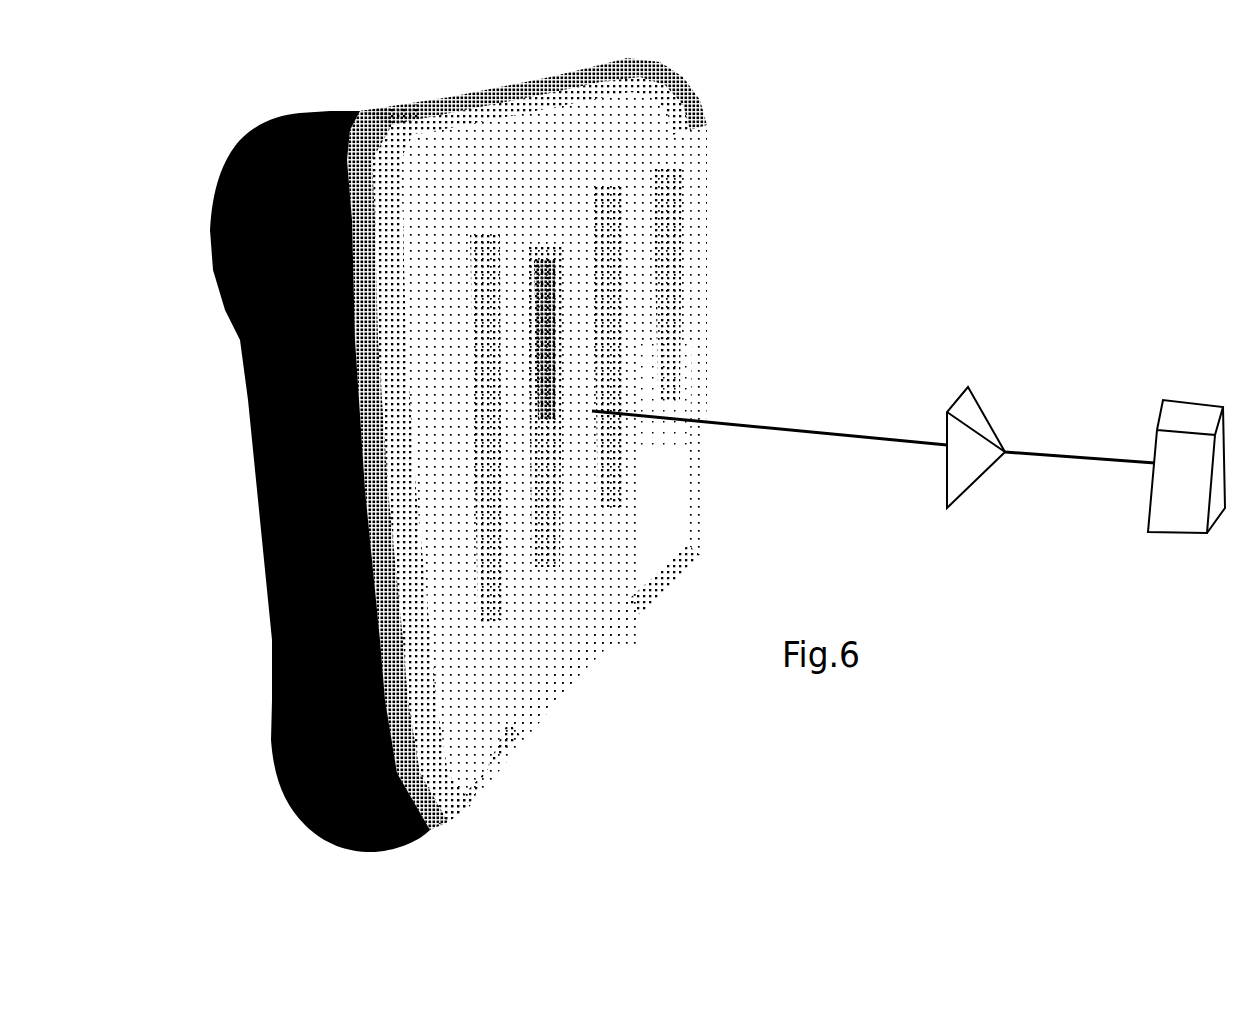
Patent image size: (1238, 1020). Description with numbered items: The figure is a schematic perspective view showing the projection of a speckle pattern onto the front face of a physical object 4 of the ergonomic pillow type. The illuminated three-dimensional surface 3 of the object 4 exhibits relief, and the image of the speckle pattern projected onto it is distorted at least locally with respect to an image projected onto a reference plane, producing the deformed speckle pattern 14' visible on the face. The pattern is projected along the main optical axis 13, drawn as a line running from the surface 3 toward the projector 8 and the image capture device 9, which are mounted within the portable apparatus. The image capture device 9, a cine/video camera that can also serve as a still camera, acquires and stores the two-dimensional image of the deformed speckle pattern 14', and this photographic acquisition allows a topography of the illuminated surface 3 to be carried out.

The physical object 4 is at (712, 134).
The three-dimensional surface 3 is at (683, 228).
The deformed speckle pattern 14' is at (666, 340).
The main optical axis 13 is at (842, 432).
The image capture device 9 is at (989, 406).
The projector 8 is at (1177, 402).